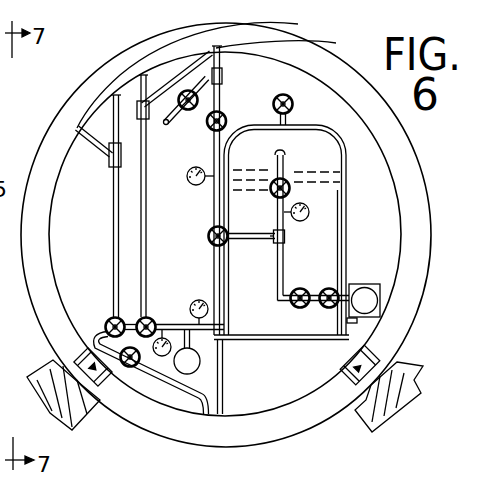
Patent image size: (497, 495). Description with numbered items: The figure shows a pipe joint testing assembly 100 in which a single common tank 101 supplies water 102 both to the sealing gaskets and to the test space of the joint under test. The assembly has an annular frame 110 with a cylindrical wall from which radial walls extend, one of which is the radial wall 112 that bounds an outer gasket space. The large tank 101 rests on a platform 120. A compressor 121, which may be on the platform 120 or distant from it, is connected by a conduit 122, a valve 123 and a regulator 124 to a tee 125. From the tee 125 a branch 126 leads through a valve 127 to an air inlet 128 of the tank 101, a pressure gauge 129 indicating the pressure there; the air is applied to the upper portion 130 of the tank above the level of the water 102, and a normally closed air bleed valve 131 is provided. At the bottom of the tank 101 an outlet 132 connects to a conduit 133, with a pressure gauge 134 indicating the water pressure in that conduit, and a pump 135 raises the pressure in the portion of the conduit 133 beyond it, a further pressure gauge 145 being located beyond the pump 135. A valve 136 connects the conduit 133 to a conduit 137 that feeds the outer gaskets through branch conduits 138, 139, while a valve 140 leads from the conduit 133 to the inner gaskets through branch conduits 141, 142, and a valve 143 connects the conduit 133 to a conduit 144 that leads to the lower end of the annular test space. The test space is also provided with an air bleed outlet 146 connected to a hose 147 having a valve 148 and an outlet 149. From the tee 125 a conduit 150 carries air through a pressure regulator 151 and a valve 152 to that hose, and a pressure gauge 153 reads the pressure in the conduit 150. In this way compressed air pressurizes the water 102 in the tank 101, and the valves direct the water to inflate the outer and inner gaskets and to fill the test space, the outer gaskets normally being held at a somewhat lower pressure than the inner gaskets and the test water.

The testing assembly 100 is at (366, 142).
The common tank 101 is at (346, 245).
The water 102 is at (285, 230).
The annular frame 110 is at (84, 225).
The radial wall 112 is at (59, 178).
The platform 120 is at (258, 341).
The compressor 121 is at (378, 297).
The conduit 122 is at (352, 322).
The valve 123 is at (345, 281).
The regulator 124 is at (283, 292).
The tee 125 is at (285, 238).
The branch 126 is at (343, 198).
The valve 127 is at (344, 178).
The air inlet 128 is at (286, 155).
The pressure gauge 129 is at (311, 213).
The upper portion of the tank 130 is at (286, 165).
The air bleed valve 131 is at (293, 105).
The outlet 132 is at (250, 333).
The conduit 133 is at (223, 323).
The pressure gauge 134 is at (223, 291).
The pump 135 is at (200, 367).
The valve 136 is at (193, 304).
The conduit 137 is at (148, 272).
The branch conduit 138 is at (141, 88).
The branch conduit 139 is at (173, 80).
The valve 140 is at (113, 316).
The branch conduit 141 is at (113, 100).
The branch conduit 142 is at (80, 130).
The valve 143 is at (126, 366).
The conduit 144 is at (179, 396).
The pressure gauge 145 is at (161, 357).
The air bleed outlet 146 is at (209, 70).
The hose 147 is at (297, 44).
The valve 148 is at (218, 88).
The outlet 149 is at (166, 125).
The conduit 150 is at (214, 203).
The pressure regulator 151 is at (208, 236).
The valve 152 is at (225, 108).
The pressure gauge 153 is at (191, 182).